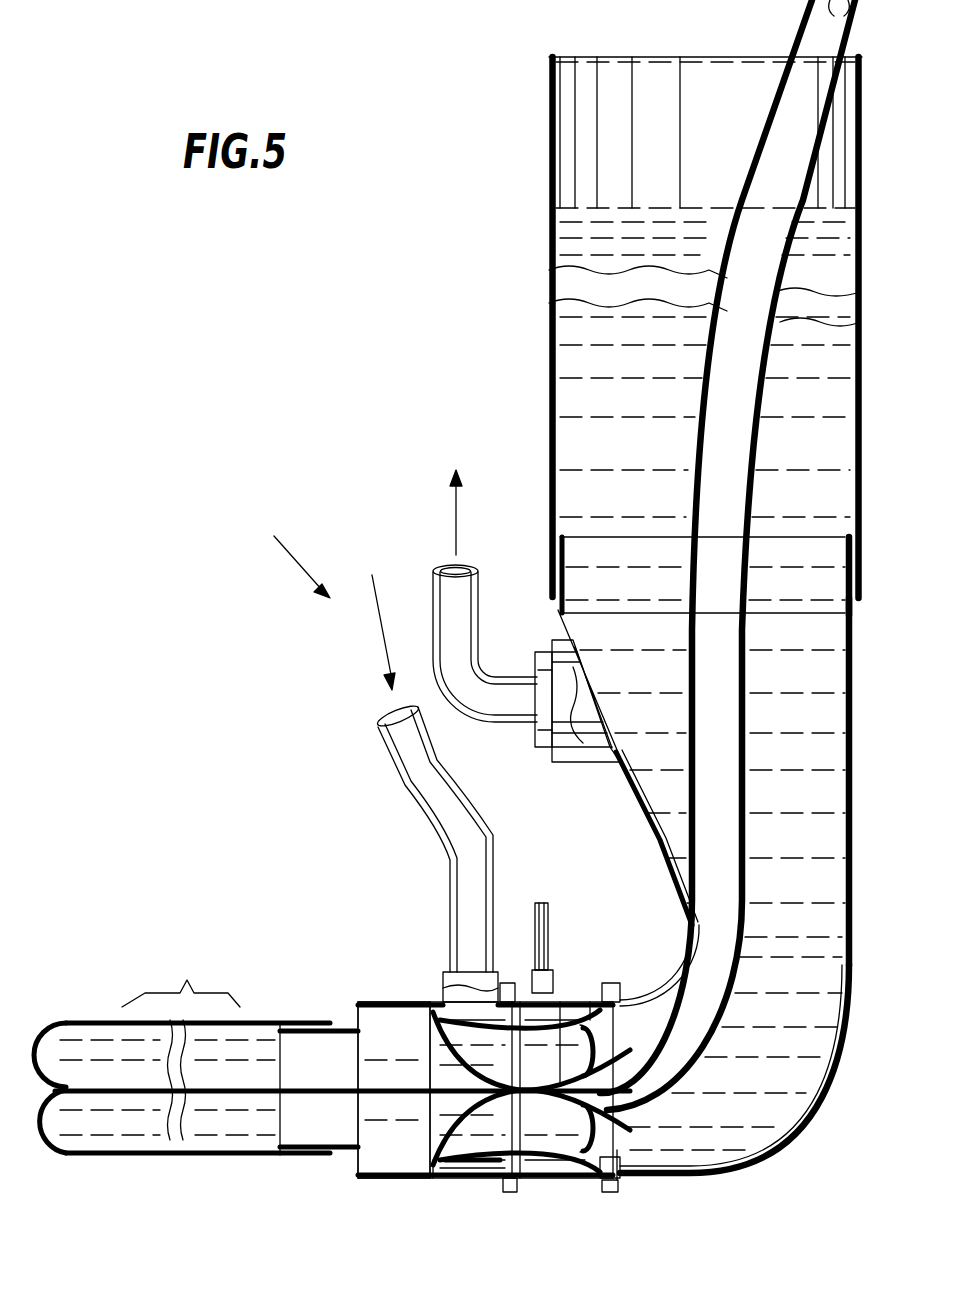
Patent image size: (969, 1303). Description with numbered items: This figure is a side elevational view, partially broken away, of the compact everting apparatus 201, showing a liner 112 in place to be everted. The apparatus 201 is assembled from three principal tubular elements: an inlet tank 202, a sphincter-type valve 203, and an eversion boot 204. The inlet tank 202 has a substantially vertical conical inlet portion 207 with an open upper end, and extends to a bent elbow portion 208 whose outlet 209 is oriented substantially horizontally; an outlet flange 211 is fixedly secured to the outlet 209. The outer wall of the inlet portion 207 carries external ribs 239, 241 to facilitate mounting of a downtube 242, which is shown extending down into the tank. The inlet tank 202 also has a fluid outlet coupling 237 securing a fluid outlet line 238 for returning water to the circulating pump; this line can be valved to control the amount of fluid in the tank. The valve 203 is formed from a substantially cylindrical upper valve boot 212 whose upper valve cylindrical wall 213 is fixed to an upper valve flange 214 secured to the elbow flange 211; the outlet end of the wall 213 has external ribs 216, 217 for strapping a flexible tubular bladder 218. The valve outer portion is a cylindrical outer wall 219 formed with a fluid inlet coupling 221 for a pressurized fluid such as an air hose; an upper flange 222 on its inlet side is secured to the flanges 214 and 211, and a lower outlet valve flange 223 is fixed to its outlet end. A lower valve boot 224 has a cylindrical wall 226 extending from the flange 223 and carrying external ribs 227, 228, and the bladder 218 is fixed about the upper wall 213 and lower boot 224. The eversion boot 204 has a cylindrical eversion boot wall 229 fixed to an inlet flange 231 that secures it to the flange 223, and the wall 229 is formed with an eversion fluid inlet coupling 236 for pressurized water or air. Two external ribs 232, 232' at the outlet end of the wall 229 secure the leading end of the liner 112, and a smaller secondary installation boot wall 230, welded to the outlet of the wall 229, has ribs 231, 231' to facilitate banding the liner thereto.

The liner 112 is at (230, 1157).
The everting apparatus 201 is at (284, 552).
The inlet tank 202 is at (852, 795).
The sphincter-type valve 203 is at (550, 1202).
The eversion boot 204 is at (350, 1150).
The conical inlet portion 207 is at (823, 563).
The bent elbow portion 208 is at (803, 1087).
The outlet 209 is at (613, 1103).
The outlet flange 211 is at (620, 1177).
The upper valve boot 212 is at (572, 1202).
The upper valve cylindrical wall 213 is at (580, 1000).
The upper valve flange 214 is at (608, 983).
The external rib 216 is at (560, 987).
The external rib 217 is at (532, 970).
The flexible tubular bladder 218 is at (433, 1190).
The outer wall 219 is at (617, 1187).
The fluid inlet coupling 221 is at (545, 903).
The upper flange 222 is at (597, 993).
The lower outlet valve flange 223 is at (523, 1193).
The lower valve boot 224 is at (473, 1163).
The lower valve boot wall 226 is at (403, 1002).
The external rib 227 is at (462, 1193).
The external rib 228 is at (440, 1170).
The eversion boot wall 229 is at (423, 1000).
The secondary installation boot wall 230 is at (340, 1025).
The inlet flange / rib 231 is at (330, 919).
The rib 231' is at (256, 1011).
The external rib 232 is at (382, 952).
The external rib 232' is at (318, 982).
The eversion fluid inlet coupling 236 is at (450, 970).
The fluid outlet coupling 237 is at (563, 660).
The fluid outlet line 238 is at (449, 595).
The external rib 239 is at (850, 602).
The external rib 241 is at (857, 535).
The downtube 242 is at (860, 236).